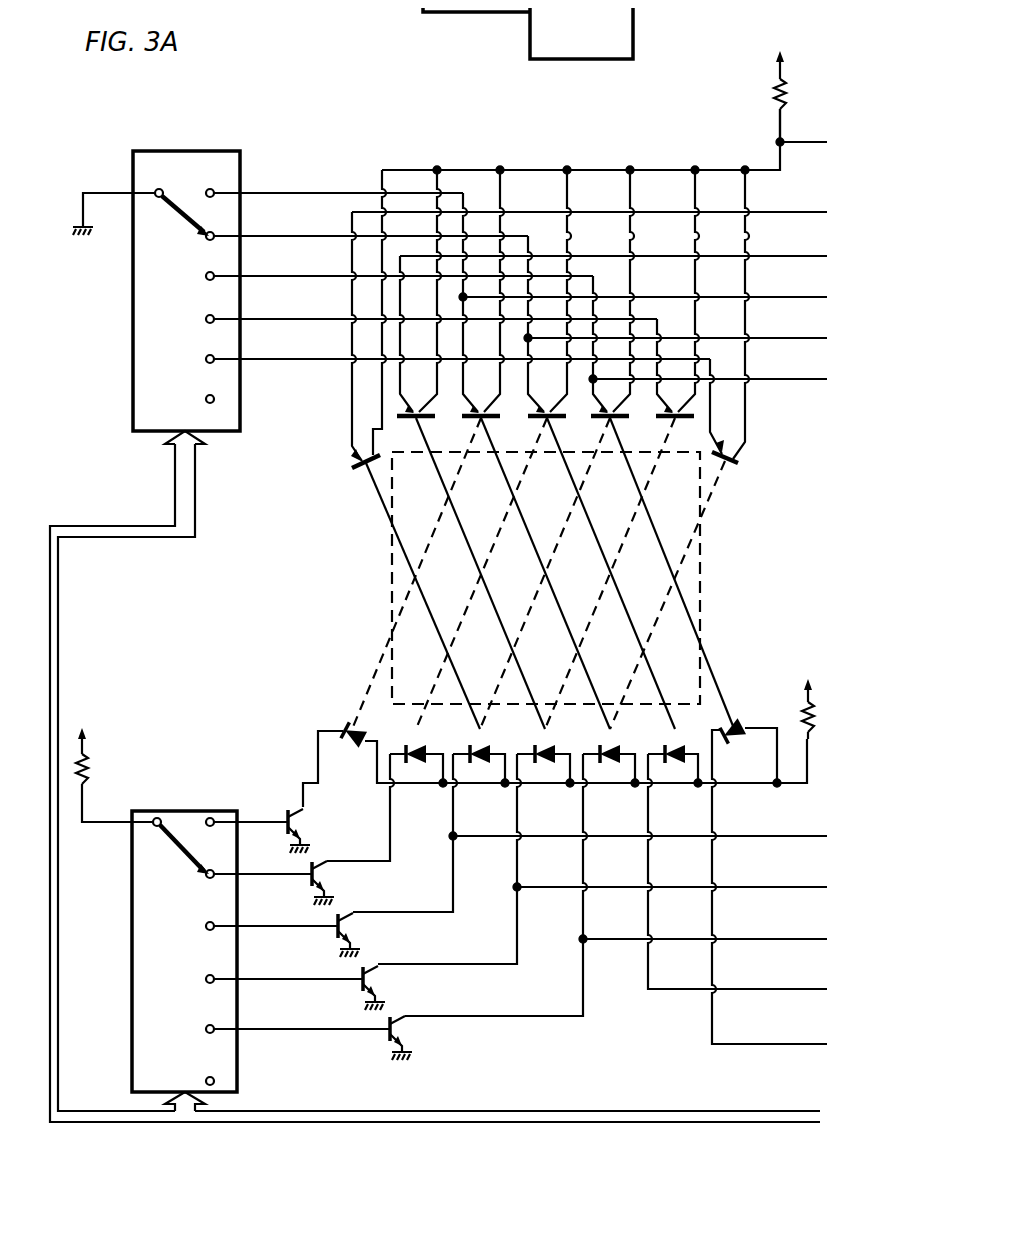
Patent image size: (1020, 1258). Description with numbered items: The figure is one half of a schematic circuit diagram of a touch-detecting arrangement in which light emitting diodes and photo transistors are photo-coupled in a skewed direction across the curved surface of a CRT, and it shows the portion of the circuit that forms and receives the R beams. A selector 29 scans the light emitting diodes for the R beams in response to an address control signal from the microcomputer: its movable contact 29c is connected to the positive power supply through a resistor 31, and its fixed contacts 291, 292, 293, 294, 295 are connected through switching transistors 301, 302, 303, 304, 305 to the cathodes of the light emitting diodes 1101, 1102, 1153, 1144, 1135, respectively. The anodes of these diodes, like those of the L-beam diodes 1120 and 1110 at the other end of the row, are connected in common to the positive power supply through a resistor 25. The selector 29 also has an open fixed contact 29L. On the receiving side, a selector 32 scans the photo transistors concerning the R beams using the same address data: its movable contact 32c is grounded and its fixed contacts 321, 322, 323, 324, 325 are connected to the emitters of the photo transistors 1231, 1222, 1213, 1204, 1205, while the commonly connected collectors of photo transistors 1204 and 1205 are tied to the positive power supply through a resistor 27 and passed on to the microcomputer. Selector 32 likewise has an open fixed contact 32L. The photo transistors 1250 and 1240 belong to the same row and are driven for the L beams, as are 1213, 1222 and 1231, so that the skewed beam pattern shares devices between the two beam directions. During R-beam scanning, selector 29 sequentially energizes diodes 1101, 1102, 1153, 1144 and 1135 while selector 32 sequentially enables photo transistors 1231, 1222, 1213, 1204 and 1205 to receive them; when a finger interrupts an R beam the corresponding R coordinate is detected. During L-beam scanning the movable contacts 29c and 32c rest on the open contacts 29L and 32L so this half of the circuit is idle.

The selector 32 is at (179, 152).
The movable contact 32c is at (161, 190).
The fixed contact 321 is at (210, 190).
The fixed contact 322 is at (204, 238).
The fixed contact 323 is at (204, 278).
The fixed contact 324 is at (204, 321).
The fixed contact 325 is at (204, 361).
The open fixed contact 32L is at (204, 401).
The resistor 27 is at (775, 96).
The resistor 25 is at (795, 722).
The resistor 31 is at (88, 766).
The selector 29 is at (238, 1065).
The movable contact 29c is at (161, 805).
The fixed contact 291 is at (212, 805).
The fixed contact 292 is at (205, 877).
The fixed contact 293 is at (206, 927).
The fixed contact 294 is at (206, 980).
The fixed contact 295 is at (206, 1030).
The open fixed contact 29L is at (206, 1082).
The photo transistor 1250 is at (394, 589).
The photo transistor 1240 is at (471, 567).
The photo transistor 1231 is at (481, 567).
The photo transistor 1222 is at (545, 567).
The photo transistor 1213 is at (606, 567).
The photo transistor 1204 is at (636, 567).
The photo transistor 1205 is at (738, 466).
The light emitting diode 1101 is at (343, 725).
The light emitting diode 1102 is at (405, 747).
The light emitting diode 1153 is at (468, 747).
The light emitting diode 1144 is at (532, 747).
The light emitting diode 1135 is at (597, 747).
The light emitting diode 1120 is at (662, 747).
The light emitting diode 1110 is at (724, 733).
The switching transistor 301 is at (287, 834).
The switching transistor 302 is at (311, 886).
The switching transistor 303 is at (333, 939).
The switching transistor 304 is at (353, 992).
The switching transistor 305 is at (381, 1043).